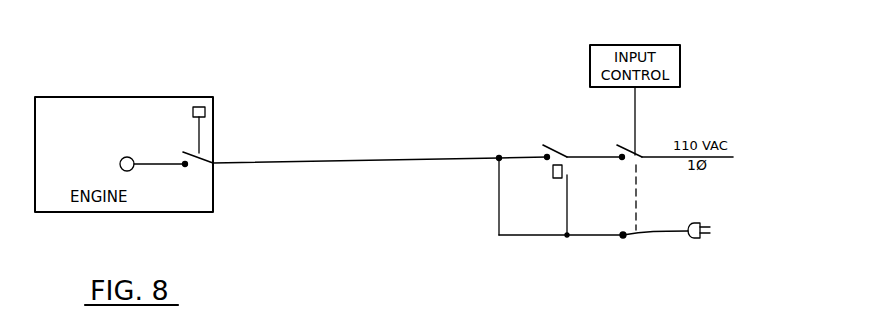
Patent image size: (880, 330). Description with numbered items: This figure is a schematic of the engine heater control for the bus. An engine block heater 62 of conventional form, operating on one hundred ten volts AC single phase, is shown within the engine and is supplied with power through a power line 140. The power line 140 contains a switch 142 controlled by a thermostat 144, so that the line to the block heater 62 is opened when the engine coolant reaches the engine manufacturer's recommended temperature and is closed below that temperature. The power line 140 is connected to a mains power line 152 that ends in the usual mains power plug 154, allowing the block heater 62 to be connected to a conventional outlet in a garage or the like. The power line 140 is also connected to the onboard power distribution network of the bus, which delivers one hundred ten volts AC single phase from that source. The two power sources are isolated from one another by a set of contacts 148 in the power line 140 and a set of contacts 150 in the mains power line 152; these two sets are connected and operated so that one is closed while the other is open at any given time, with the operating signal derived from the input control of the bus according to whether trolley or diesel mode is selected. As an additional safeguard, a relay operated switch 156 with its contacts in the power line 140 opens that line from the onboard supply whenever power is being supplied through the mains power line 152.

The engine block heater 62 is at (127, 157).
The thermostat 144 is at (206, 112).
The switch 142 is at (212, 156).
The power line 140 is at (300, 160).
The relay operated switch 156 is at (557, 145).
The set of contacts 148 is at (640, 148).
The mains power line 152 is at (523, 236).
The set of contacts 150 is at (633, 238).
The mains power plug 154 is at (693, 238).